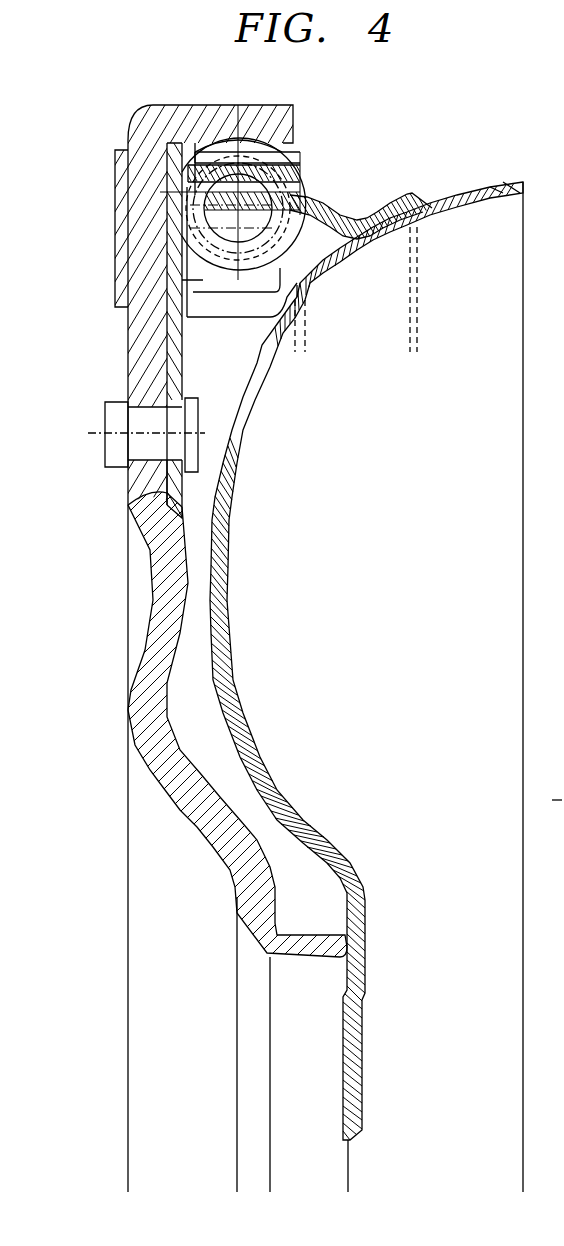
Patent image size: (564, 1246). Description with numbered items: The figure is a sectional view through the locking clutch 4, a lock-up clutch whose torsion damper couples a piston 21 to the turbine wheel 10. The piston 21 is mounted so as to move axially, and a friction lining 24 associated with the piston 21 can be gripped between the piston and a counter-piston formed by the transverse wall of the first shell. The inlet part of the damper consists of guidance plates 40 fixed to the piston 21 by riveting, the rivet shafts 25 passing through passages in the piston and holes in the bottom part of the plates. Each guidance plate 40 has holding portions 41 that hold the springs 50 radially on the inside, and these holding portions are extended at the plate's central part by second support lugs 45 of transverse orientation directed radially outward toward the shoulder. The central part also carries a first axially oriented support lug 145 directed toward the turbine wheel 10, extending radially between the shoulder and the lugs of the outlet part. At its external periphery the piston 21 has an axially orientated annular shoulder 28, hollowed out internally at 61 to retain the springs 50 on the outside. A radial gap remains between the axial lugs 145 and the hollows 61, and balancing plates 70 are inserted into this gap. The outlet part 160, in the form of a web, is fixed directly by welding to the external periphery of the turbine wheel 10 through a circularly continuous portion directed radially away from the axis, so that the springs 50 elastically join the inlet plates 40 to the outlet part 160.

The locking clutch 4 is at (188, 375).
The turbine wheel 10 is at (505, 188).
The piston 21 is at (140, 686).
The friction lining 24 is at (112, 169).
The rivet shaft 25 is at (103, 452).
The annular shoulder 28 is at (190, 105).
The guidance plate 40 is at (128, 503).
The holding portion 41 is at (195, 308).
The second support lug 45 is at (167, 283).
The spring 50 is at (293, 245).
The hollow 61 is at (253, 143).
The balancing plate 70 is at (301, 158).
The first axially oriented support lug 145 is at (301, 186).
The outlet part 160 is at (382, 203).